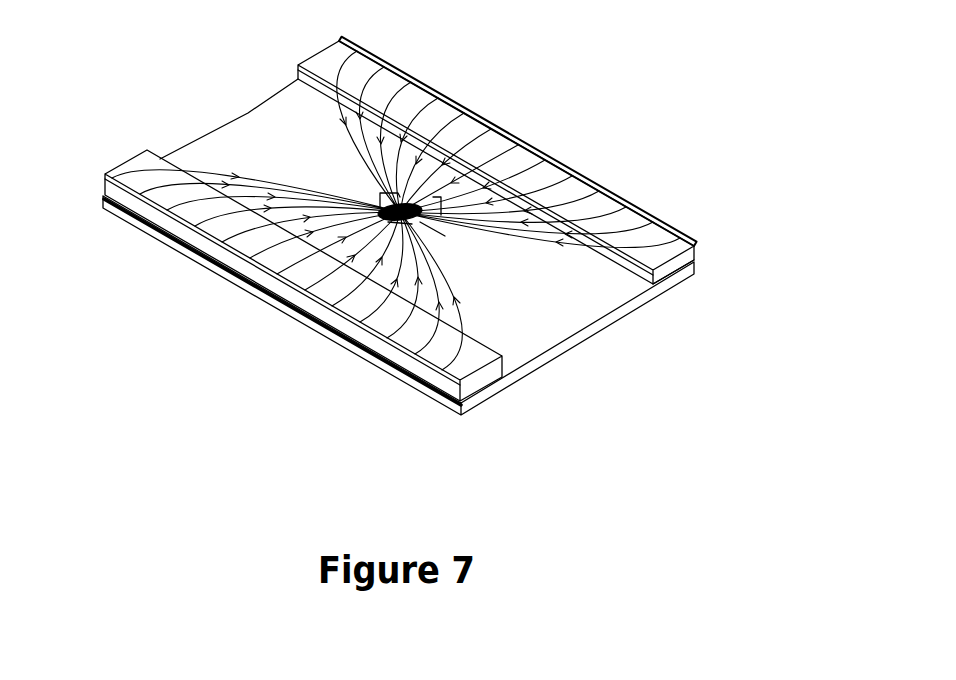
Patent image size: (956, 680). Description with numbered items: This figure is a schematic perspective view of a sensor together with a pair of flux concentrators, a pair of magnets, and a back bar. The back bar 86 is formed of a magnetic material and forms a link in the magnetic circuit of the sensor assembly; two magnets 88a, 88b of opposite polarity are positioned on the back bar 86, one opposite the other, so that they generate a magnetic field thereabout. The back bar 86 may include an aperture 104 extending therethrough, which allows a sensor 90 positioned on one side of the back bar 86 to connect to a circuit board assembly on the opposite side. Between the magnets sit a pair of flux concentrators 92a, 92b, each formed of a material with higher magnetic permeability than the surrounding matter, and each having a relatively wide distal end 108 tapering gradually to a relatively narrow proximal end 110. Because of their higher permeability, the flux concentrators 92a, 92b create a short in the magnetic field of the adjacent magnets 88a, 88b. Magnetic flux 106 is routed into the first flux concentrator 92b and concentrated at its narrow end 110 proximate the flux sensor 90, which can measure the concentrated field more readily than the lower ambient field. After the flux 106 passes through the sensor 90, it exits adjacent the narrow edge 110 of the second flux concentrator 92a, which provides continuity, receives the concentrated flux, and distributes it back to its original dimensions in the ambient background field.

The back bar 86 is at (553, 330).
The magnet 88a is at (438, 382).
The magnet 88b is at (650, 220).
The sensor 90 is at (377, 197).
The flux concentrator 92a is at (408, 226).
The flux concentrator 92b is at (665, 268).
The aperture 104 is at (427, 240).
The magnetic flux 106 is at (532, 173).
The distal end 108 is at (427, 82).
The proximal end 110 is at (372, 196).